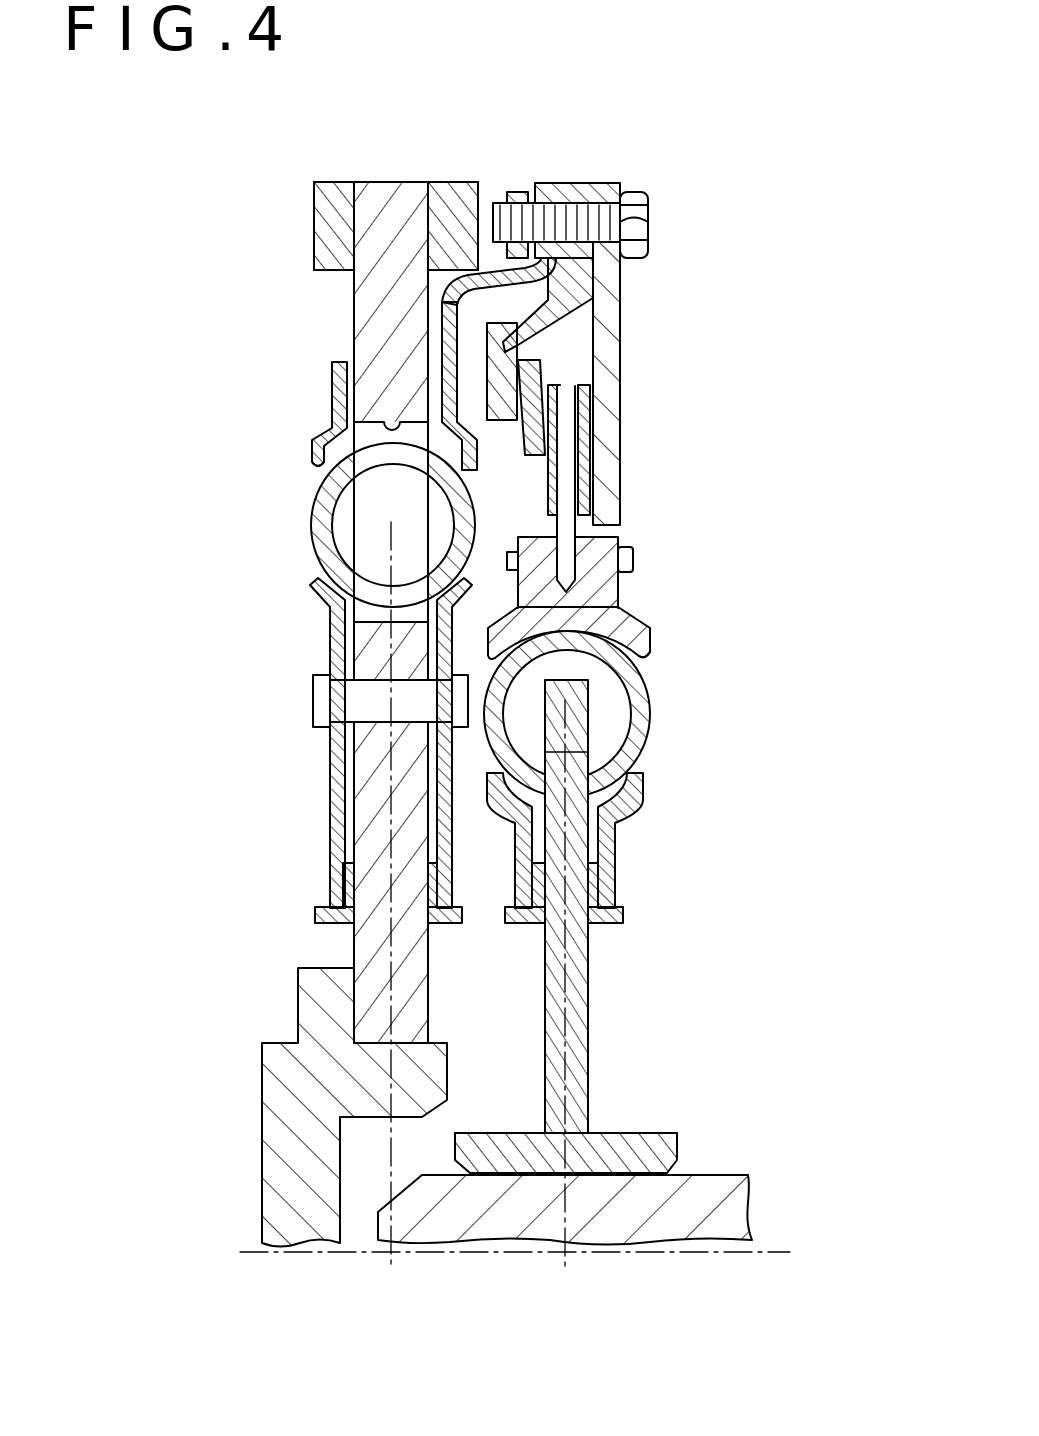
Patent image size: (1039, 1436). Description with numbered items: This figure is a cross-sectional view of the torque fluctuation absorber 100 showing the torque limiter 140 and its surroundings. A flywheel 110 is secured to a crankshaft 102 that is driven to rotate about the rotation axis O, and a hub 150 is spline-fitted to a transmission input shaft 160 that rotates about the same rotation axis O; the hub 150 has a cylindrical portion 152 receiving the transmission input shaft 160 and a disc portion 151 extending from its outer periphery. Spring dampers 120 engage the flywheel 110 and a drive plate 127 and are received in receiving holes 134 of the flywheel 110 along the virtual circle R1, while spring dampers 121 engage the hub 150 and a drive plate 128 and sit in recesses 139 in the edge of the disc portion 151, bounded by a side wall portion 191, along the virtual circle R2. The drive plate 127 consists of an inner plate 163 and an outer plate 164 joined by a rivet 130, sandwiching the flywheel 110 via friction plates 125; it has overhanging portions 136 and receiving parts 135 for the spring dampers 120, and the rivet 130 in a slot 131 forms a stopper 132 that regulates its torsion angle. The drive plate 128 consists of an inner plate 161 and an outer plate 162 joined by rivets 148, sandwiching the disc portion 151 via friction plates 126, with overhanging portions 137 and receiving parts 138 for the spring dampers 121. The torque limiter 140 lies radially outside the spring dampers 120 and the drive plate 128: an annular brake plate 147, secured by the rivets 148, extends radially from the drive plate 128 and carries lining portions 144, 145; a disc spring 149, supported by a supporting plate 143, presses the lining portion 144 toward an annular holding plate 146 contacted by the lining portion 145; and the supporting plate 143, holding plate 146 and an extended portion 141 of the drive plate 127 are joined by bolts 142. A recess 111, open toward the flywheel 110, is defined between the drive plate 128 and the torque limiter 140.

The torque fluctuation absorber 100 is at (394, 106).
The crankshaft 102 is at (300, 1150).
The flywheel 110 is at (365, 940).
The recess 111 is at (508, 500).
The spring dampers 120 is at (322, 520).
The spring dampers 121 is at (637, 705).
The friction plates 125 is at (348, 890).
The friction plates 126 is at (625, 920).
The drive plate 127 is at (273, 422).
The drive plate 128 is at (623, 856).
The rivet 130 is at (320, 702).
The slot 131 is at (360, 727).
The stopper 132 is at (325, 711).
The receiving hole 134 is at (396, 418).
The receiving part 135 is at (316, 470).
The overhanging portion 136 is at (322, 440).
The overhanging portion 137 is at (640, 634).
The receiving part 138 is at (642, 658).
The recess 139 is at (578, 732).
The torque limiter 140 is at (621, 434).
The extended portion 141 is at (486, 290).
The bolt 142 is at (635, 223).
The supporting plate 143 is at (505, 353).
The lining portion 144 is at (556, 492).
The lining portion 145 is at (588, 447).
The holding plate 146 is at (608, 398).
The brake plate 147 is at (617, 598).
The rivet 148 is at (635, 562).
The disc spring 149 is at (532, 372).
The hub 150 is at (619, 926).
The disc portion 151 is at (583, 1050).
The cylindrical portion 152 is at (613, 1150).
The transmission input shaft 160 is at (720, 1212).
The inner plate 161 is at (605, 878).
The outer plate 162 is at (640, 797).
The inner plate 163 is at (440, 842).
The outer plate 164 is at (338, 797).
The side wall portion 191 is at (588, 752).
The virtual circle R1 is at (392, 969).
The virtual circle R2 is at (600, 975).
The rotation axis O is at (770, 1252).